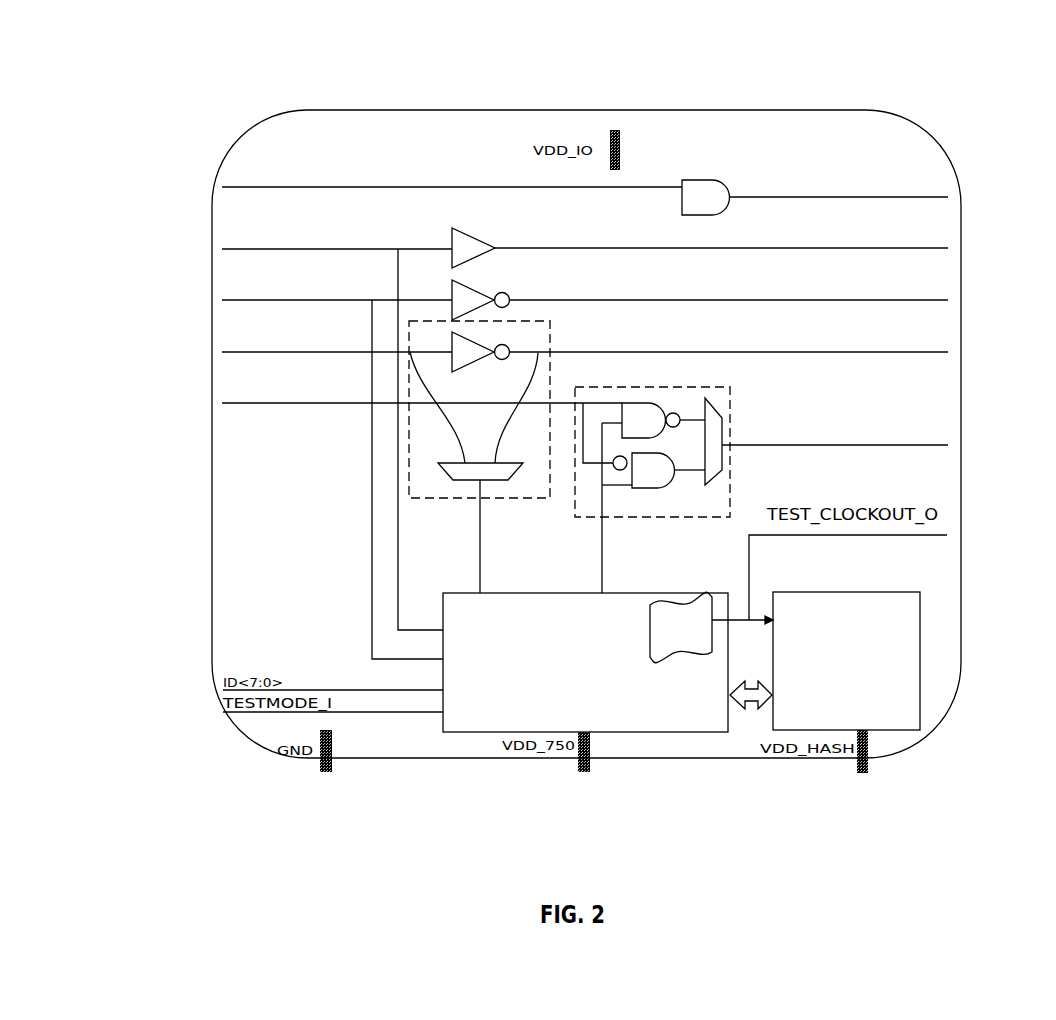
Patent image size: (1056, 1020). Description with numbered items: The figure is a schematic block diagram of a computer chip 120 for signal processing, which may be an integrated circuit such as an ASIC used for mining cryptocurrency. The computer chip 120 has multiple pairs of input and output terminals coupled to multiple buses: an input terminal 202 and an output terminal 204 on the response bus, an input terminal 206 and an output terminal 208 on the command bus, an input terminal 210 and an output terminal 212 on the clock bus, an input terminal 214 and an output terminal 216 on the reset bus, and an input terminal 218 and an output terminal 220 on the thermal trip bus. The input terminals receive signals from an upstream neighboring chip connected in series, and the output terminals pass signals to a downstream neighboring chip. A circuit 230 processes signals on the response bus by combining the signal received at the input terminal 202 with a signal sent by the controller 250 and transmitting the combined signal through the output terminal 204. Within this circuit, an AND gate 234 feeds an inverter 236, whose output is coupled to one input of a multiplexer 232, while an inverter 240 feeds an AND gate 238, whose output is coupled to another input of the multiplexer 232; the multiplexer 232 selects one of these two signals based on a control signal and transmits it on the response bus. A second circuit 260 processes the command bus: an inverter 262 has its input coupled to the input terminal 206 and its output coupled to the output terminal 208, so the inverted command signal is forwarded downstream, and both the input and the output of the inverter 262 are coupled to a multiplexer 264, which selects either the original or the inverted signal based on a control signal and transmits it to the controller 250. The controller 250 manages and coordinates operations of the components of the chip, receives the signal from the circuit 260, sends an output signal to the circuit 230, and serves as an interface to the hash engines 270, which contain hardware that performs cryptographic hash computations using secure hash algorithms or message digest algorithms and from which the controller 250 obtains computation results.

The computer chip 120 is at (607, 55).
The input terminal 202 is at (222, 401).
The output terminal 204 is at (948, 442).
The input terminal 206 is at (222, 350).
The output terminal 208 is at (948, 348).
The input terminal 210 is at (222, 298).
The output terminal 212 is at (948, 296).
The input terminal 214 is at (222, 247).
The output terminal 216 is at (948, 245).
The input terminal 218 is at (222, 185).
The output terminal 220 is at (948, 190).
The circuit 230 is at (684, 459).
The multiplexer 232 is at (713, 440).
The AND gate 234 is at (640, 412).
The inverter 236 is at (672, 418).
The AND gate 238 is at (645, 486).
The inverter 240 is at (613, 466).
The controller 250 is at (633, 700).
The circuit 260 is at (468, 430).
The inverter 262 is at (465, 351).
The multiplexer 264 is at (447, 466).
The hash engines 270 is at (898, 618).